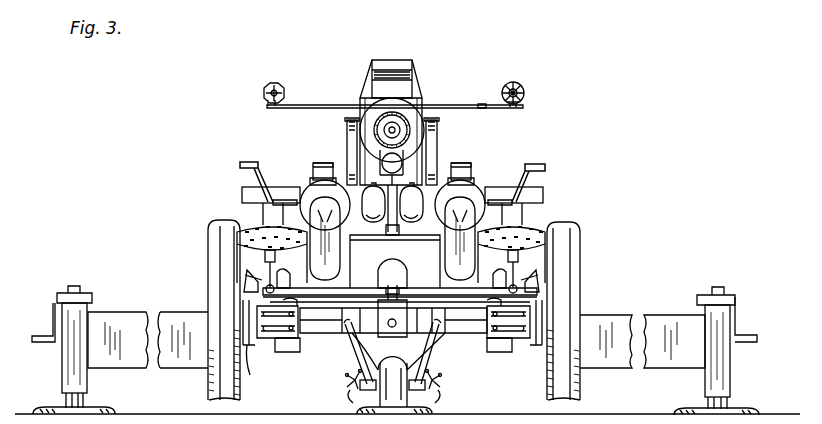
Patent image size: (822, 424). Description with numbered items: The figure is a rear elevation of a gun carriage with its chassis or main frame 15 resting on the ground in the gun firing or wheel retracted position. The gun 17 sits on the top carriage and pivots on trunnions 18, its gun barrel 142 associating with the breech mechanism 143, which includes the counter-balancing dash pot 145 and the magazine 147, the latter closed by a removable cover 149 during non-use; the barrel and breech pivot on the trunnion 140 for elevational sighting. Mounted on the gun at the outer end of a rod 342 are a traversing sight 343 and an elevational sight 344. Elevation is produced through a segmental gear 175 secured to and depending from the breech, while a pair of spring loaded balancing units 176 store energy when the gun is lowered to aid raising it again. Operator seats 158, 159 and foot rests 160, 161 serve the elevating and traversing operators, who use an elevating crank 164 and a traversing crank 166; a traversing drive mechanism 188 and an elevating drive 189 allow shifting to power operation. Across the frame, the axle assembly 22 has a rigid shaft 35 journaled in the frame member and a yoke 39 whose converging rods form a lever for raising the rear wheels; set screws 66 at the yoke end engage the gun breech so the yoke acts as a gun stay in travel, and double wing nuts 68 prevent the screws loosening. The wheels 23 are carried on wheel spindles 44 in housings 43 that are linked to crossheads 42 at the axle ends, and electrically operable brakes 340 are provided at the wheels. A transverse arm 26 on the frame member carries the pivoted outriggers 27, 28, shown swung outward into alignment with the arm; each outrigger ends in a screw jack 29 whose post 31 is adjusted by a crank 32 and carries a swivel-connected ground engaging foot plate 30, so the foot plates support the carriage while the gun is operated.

The chassis or main frame 15 is at (594, 297).
The gun 17 is at (401, 132).
The trunnions 18 is at (347, 138).
The axle assembly 22 is at (320, 334).
The wheels 23 is at (210, 244).
The transverse arm 26 is at (462, 345).
The outrigger 27 is at (104, 320).
The outrigger 28 is at (667, 318).
The screw jack 29 is at (65, 357).
The foot plate 30 is at (110, 411).
The post 31 is at (86, 402).
The cranks 32 is at (46, 330).
The shaft 35 is at (466, 342).
The yoke 39 is at (423, 345).
The crossheads 42 is at (288, 353).
The housings 43 is at (258, 339).
The wheel spindles 44 is at (252, 345).
The set screws 66 is at (360, 385).
The double wing nuts 68 is at (350, 395).
The trunnion 140 is at (347, 124).
The gun barrel 142 is at (360, 114).
The breech mechanism 143 is at (414, 118).
The counter-balancing dash pot 145 is at (396, 165).
The magazine 147 is at (424, 98).
The removable cover 149 is at (413, 72).
The operator seat 158 is at (537, 226).
The operator seat 159 is at (245, 225).
The foot rest 160 is at (258, 279).
The foot rest 161 is at (535, 274).
The elevating crank 164 is at (543, 164).
The traversing crank 166 is at (247, 162).
The segmental gear 175 is at (384, 208).
The spring loaded balancing units 176 is at (402, 208).
The traversing drive mechanism 188 is at (313, 168).
The elevating drive 189 is at (476, 172).
The electrically operable brakes 340 is at (248, 378).
The rod 342 is at (484, 104).
The traversing sight 343 is at (287, 76).
The elevational sight 344 is at (525, 88).